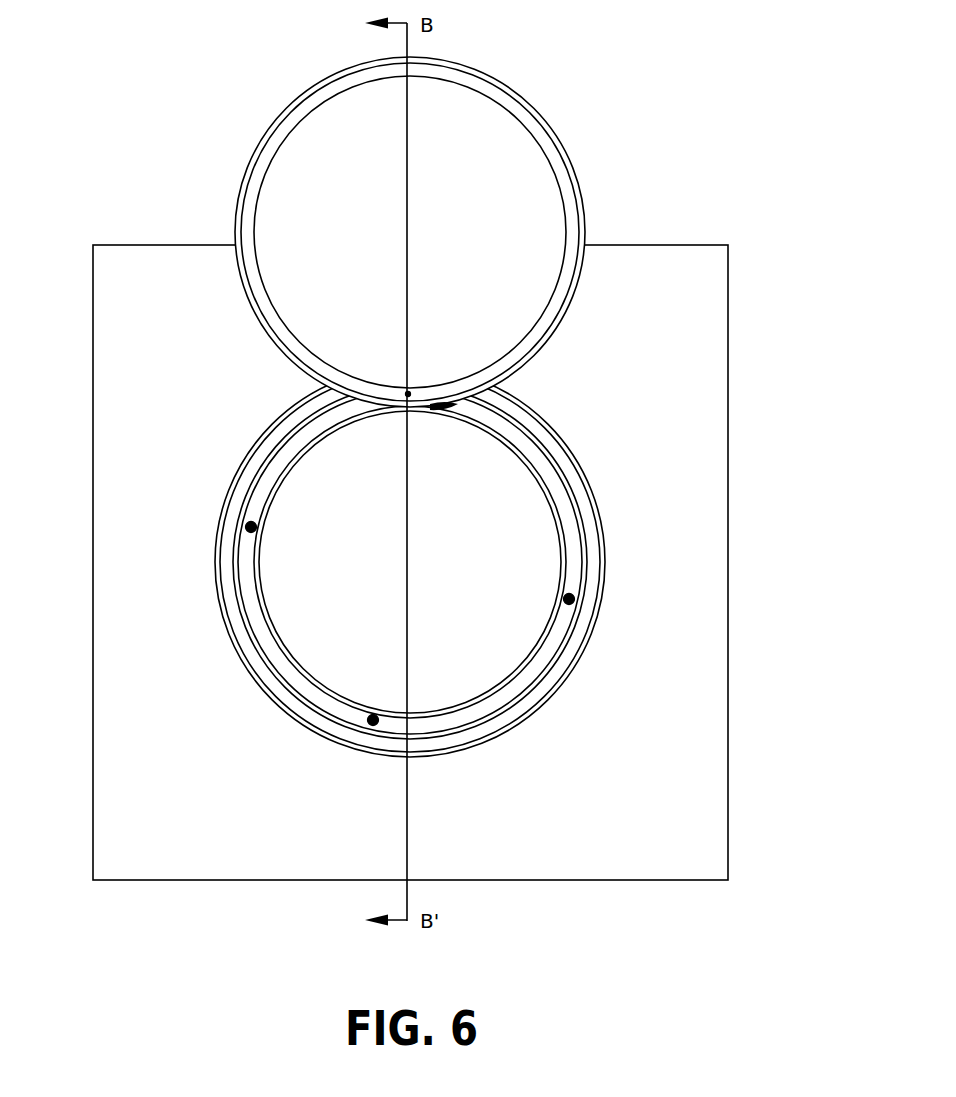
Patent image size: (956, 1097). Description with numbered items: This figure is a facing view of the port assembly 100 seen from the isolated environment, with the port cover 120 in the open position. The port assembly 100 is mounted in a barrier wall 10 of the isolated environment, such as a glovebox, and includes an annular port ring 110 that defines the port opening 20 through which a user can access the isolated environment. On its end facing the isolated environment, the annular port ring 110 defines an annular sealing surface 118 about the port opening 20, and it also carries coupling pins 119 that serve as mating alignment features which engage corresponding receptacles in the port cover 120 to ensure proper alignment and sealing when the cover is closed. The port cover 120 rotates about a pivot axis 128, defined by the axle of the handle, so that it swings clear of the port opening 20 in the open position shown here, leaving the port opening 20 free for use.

The barrier wall 10 is at (690, 855).
The port opening 20 is at (520, 554).
The port assembly 100 is at (424, 578).
The annular port ring 110 is at (580, 498).
The annular sealing surface 118 is at (486, 705).
The coupling pins 119 is at (250, 527).
The port cover 120 is at (525, 173).
The pivot axis 128 is at (410, 395).